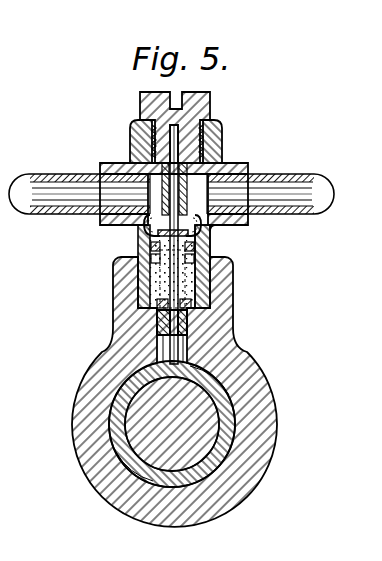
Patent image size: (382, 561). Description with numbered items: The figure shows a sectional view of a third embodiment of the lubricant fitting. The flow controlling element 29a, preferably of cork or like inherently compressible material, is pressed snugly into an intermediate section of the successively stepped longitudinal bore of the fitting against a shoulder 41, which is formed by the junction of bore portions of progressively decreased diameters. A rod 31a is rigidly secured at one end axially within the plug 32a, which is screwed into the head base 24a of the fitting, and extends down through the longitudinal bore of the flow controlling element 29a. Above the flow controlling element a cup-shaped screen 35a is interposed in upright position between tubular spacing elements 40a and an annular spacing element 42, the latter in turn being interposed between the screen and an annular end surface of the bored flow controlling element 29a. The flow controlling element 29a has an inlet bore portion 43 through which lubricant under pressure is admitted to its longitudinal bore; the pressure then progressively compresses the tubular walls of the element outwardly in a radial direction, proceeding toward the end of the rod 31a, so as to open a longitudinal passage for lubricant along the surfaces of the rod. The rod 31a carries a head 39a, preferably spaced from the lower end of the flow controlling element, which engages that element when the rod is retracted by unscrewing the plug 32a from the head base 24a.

The head base 24a is at (139, 132).
The plug 32a is at (203, 108).
The tubular spacing elements 40a is at (221, 160).
The cup-shaped screen 35a is at (147, 229).
The annular spacing element 42 is at (211, 241).
The inlet bore portion 43 is at (157, 262).
The rod 31a is at (172, 291).
The shoulder 41 is at (167, 308).
The head 39a is at (160, 323).
The flow controlling element 29a is at (183, 286).